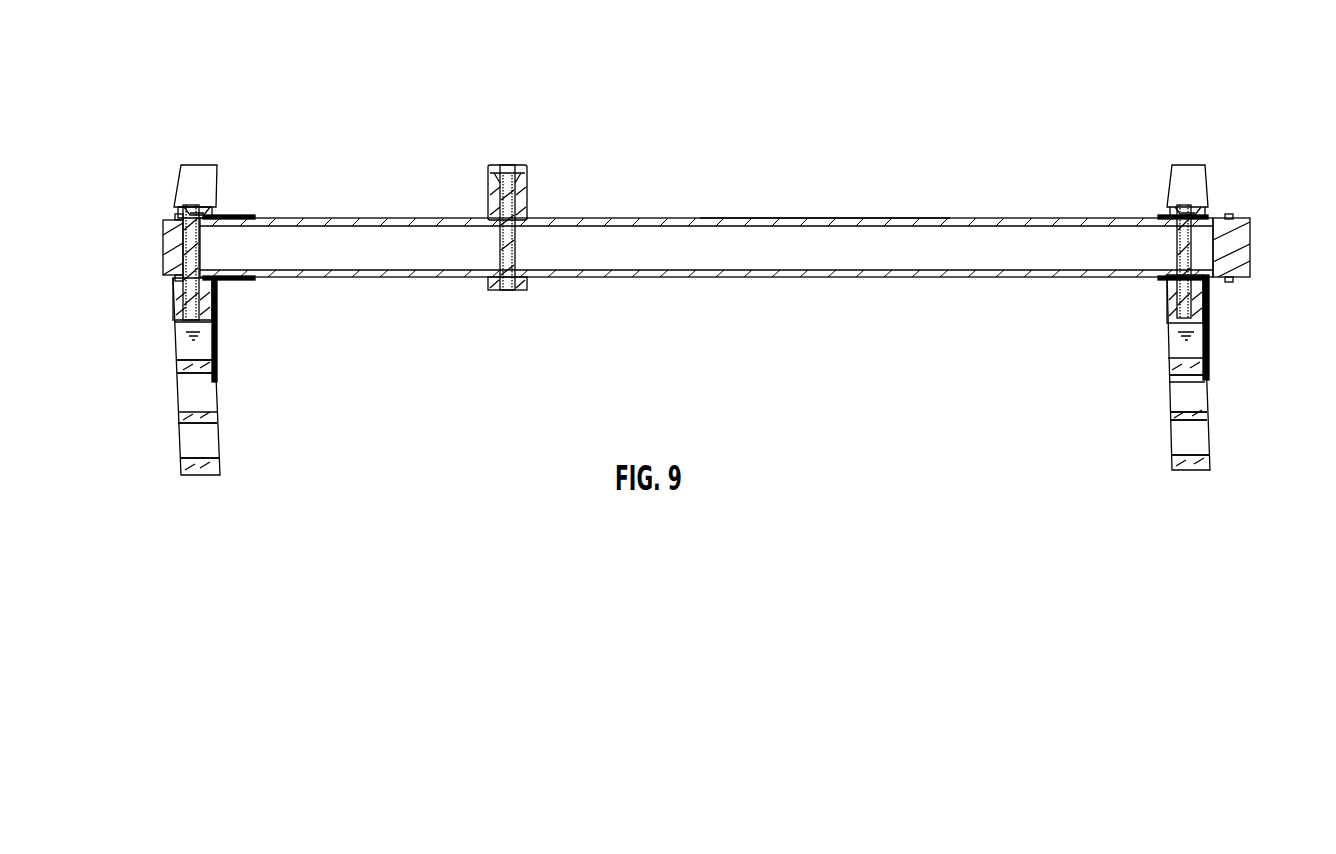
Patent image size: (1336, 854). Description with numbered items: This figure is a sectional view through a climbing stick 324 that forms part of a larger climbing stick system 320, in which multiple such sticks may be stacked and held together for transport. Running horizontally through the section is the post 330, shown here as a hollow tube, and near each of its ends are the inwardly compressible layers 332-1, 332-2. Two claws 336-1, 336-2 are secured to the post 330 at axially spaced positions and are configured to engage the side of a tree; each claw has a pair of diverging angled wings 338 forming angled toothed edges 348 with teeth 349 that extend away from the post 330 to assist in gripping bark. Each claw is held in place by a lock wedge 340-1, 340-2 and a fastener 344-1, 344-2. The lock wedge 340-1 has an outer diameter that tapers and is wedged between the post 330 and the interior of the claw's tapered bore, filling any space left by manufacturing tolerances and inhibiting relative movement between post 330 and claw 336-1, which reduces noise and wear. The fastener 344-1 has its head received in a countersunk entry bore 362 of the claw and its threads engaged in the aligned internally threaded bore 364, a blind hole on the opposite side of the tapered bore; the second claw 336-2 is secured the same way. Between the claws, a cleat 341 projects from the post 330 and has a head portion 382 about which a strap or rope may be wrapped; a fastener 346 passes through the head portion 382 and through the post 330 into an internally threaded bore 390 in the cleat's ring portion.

The climbing stick system 320 is at (116, 135).
The climbing stick 324 is at (822, 218).
The post 330 is at (357, 282).
The inwardly compressible layer 332-1 is at (245, 282).
The inwardly compressible layer 332-2 is at (1233, 282).
The claw 336-1 is at (198, 165).
The claw 336-2 is at (1188, 165).
The angled wings 338 is at (220, 443).
The lock wedge 340-1 is at (177, 288).
The lock wedge 340-2 is at (1167, 293).
The cleat 341 is at (527, 203).
The fastener 344-1 is at (188, 238).
The fastener 344-2 is at (1180, 253).
The fastener 346 is at (500, 207).
The angled toothed edges 348 is at (184, 363).
The teeth 349 is at (187, 467).
The entry bore 362 is at (217, 215).
The internally threaded bore 364 is at (210, 308).
The head portion 382 is at (527, 185).
The internally threaded bore 390 is at (517, 282).